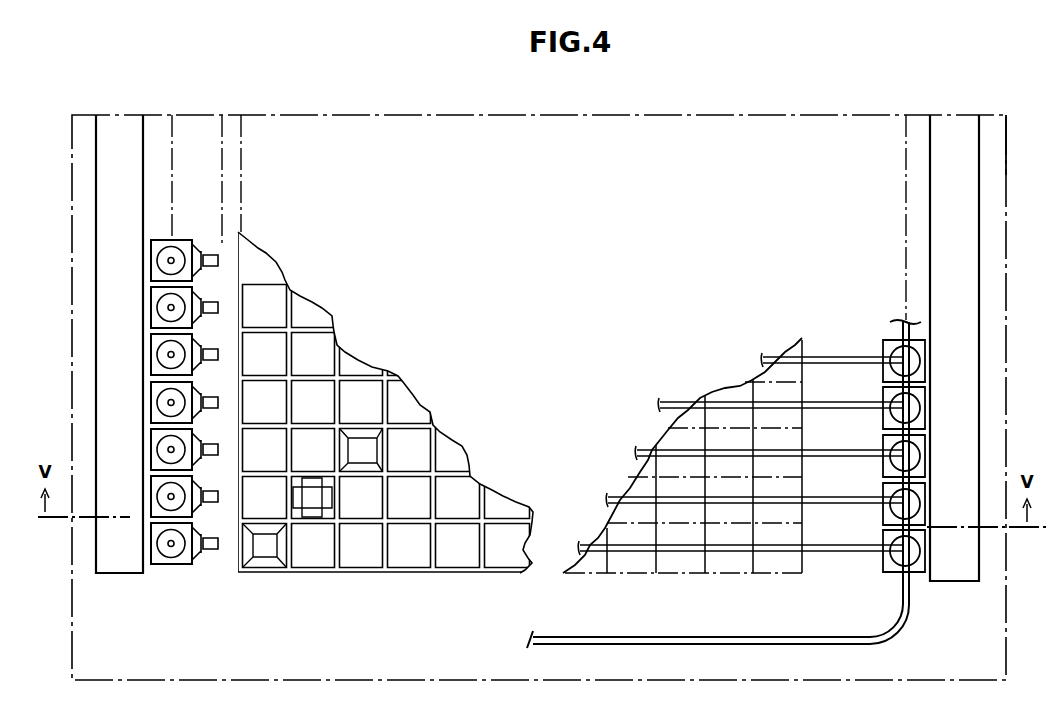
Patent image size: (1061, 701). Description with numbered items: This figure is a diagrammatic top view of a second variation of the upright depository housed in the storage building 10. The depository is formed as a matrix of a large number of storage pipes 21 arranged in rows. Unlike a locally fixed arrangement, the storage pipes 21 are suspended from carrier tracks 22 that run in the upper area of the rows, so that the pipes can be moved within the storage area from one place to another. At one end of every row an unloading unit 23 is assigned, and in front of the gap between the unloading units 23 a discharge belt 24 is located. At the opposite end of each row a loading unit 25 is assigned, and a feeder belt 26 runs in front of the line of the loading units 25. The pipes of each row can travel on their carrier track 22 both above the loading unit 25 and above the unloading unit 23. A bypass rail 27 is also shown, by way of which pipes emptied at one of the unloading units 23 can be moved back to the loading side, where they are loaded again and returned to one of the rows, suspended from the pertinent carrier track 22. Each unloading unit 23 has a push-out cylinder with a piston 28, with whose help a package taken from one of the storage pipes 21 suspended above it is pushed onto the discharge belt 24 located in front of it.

The storage building 10 is at (1007, 212).
The storage pipes 21 is at (405, 405).
The carrier tracks 22 is at (850, 505).
The unloading unit 23 is at (190, 562).
The discharge belt 24 is at (110, 556).
The loading unit 25 is at (890, 568).
The feeder belt 26 is at (965, 568).
The bypass rail 27 is at (675, 636).
The piston 28 is at (222, 300).